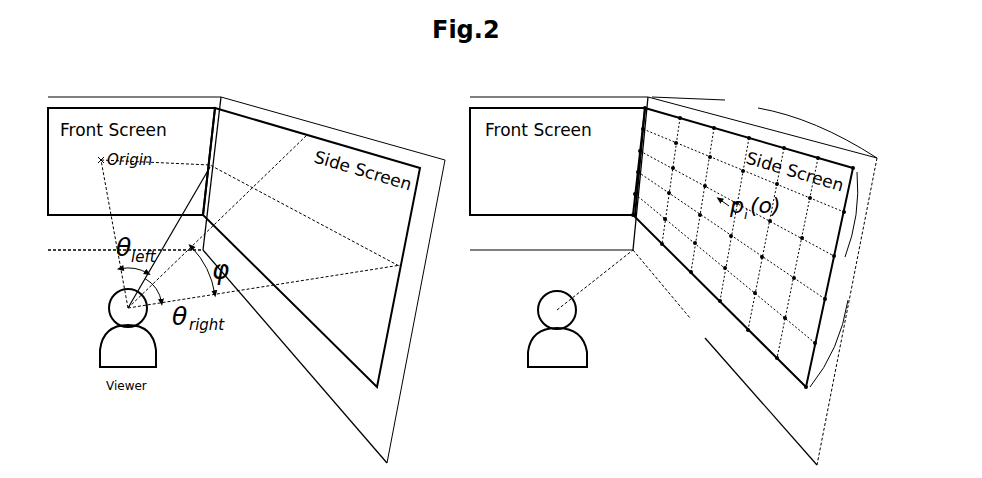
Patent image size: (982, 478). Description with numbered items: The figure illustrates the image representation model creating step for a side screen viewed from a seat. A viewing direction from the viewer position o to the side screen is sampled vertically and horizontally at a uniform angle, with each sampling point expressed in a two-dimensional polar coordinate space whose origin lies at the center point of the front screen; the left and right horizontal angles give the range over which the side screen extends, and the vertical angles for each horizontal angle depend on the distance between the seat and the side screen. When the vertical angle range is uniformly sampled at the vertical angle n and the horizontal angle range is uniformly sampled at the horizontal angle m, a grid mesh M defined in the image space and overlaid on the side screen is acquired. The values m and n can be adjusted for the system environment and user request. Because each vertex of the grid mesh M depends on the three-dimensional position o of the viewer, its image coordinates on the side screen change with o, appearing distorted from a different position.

The horizontal angle sampling number m is at (764, 124).
The vertical angle sampling number n is at (834, 279).
The grid mesh M is at (725, 357).
The three-dimensional position of the viewer o is at (557, 323).